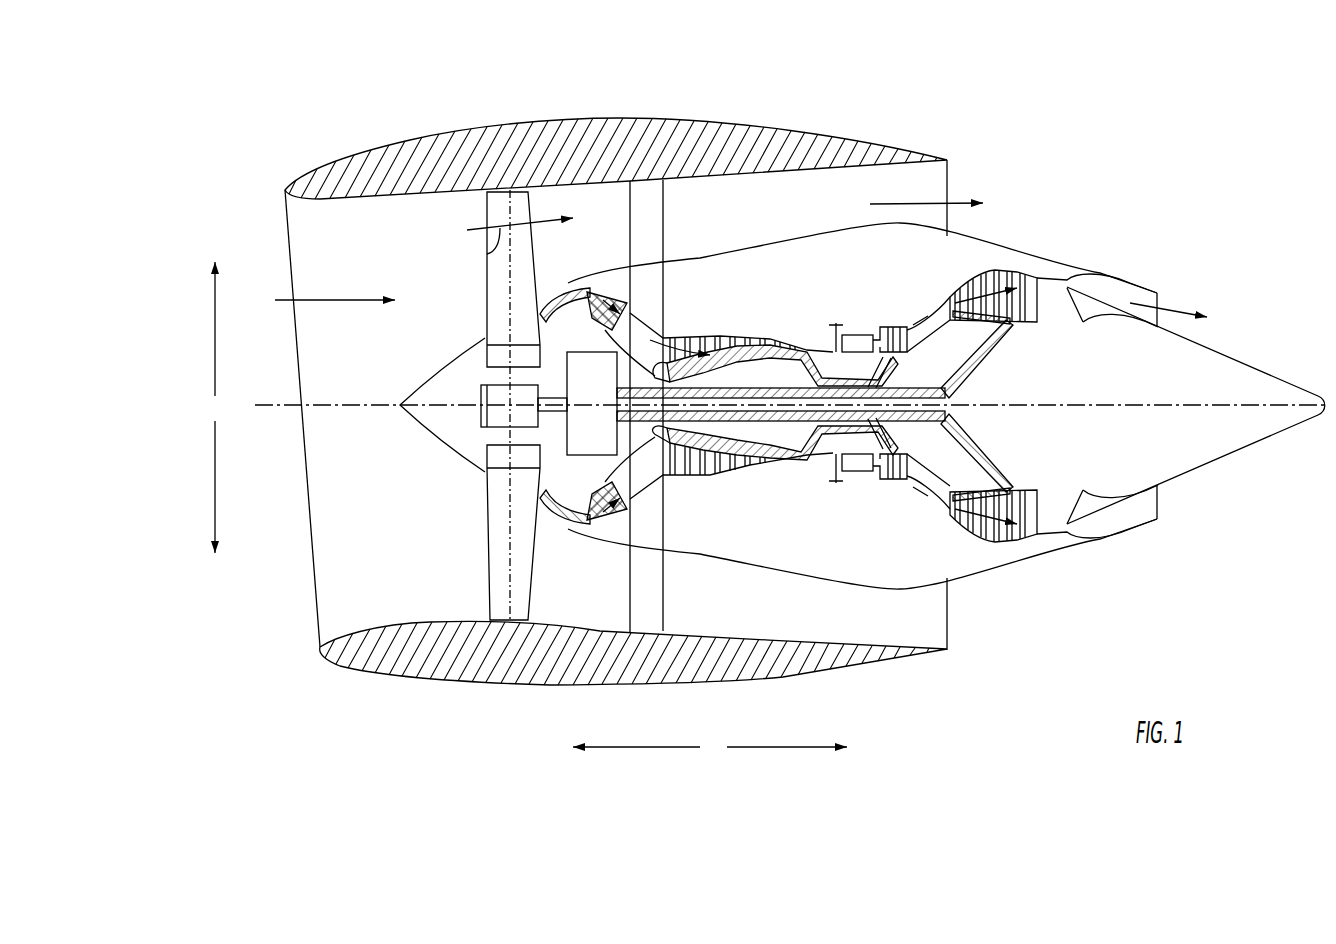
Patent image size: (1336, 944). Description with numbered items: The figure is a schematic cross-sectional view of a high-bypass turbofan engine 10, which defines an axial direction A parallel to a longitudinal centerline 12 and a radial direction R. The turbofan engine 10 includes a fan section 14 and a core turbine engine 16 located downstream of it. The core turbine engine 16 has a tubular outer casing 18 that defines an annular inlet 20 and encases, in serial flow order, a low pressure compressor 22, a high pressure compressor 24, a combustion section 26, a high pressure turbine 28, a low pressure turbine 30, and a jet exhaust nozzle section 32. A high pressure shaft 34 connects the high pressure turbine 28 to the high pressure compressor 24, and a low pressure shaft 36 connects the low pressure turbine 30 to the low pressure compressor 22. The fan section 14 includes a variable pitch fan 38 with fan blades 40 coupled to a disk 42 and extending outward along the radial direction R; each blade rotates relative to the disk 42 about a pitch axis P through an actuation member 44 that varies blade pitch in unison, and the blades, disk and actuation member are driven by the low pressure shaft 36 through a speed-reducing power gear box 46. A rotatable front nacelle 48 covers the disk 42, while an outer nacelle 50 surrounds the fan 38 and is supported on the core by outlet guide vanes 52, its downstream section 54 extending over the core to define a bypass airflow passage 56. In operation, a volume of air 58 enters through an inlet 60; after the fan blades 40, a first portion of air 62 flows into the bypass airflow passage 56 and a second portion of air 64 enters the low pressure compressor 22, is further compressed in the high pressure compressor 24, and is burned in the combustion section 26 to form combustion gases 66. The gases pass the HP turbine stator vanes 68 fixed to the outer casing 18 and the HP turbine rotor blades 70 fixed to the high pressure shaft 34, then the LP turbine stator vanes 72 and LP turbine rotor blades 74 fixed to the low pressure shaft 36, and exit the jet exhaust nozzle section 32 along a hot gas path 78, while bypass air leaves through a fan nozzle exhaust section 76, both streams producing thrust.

The turbofan engine 10 is at (1085, 140).
The longitudinal centerline 12 is at (1105, 400).
The fan section 14 is at (522, 93).
The core turbine engine 16 is at (820, 283).
The outer casing 18 is at (813, 572).
The annular inlet 20 is at (572, 513).
The low pressure compressor 22 is at (628, 482).
The high pressure compressor 24 is at (692, 463).
The combustion section 26 is at (851, 473).
The high pressure turbine 28 is at (968, 461).
The low pressure turbine 30 is at (1028, 544).
The jet exhaust nozzle section 32 is at (1083, 513).
The high pressure shaft 34 is at (882, 355).
The low pressure shaft 36 is at (987, 372).
The variable pitch fan 38 is at (452, 457).
The fan blades 40 is at (484, 558).
The disk 42 is at (497, 358).
The actuation member 44 is at (479, 390).
The power gear box 46 is at (640, 343).
The front nacelle 48 is at (405, 415).
The outer nacelle 50 is at (527, 687).
The outlet guide vanes 52 is at (663, 200).
The downstream section 54 is at (896, 152).
The bypass airflow passage 56 is at (780, 222).
The volume of air 58 is at (335, 300).
The inlet 60 is at (317, 622).
The first portion of air 62 is at (500, 226).
The second portion of air 64 is at (558, 294).
The combustion gases 66 is at (987, 280).
The HP turbine stator vanes 68 is at (868, 478).
The HP turbine rotor blades 70 is at (940, 438).
The LP turbine stator vanes 72 is at (955, 518).
The LP turbine rotor blades 74 is at (957, 527).
The fan nozzle exhaust section 76 is at (937, 187).
The hot gas path 78 is at (938, 300).
The pitch axis P is at (530, 193).
The radial direction R is at (216, 407).
The axial direction A is at (710, 745).